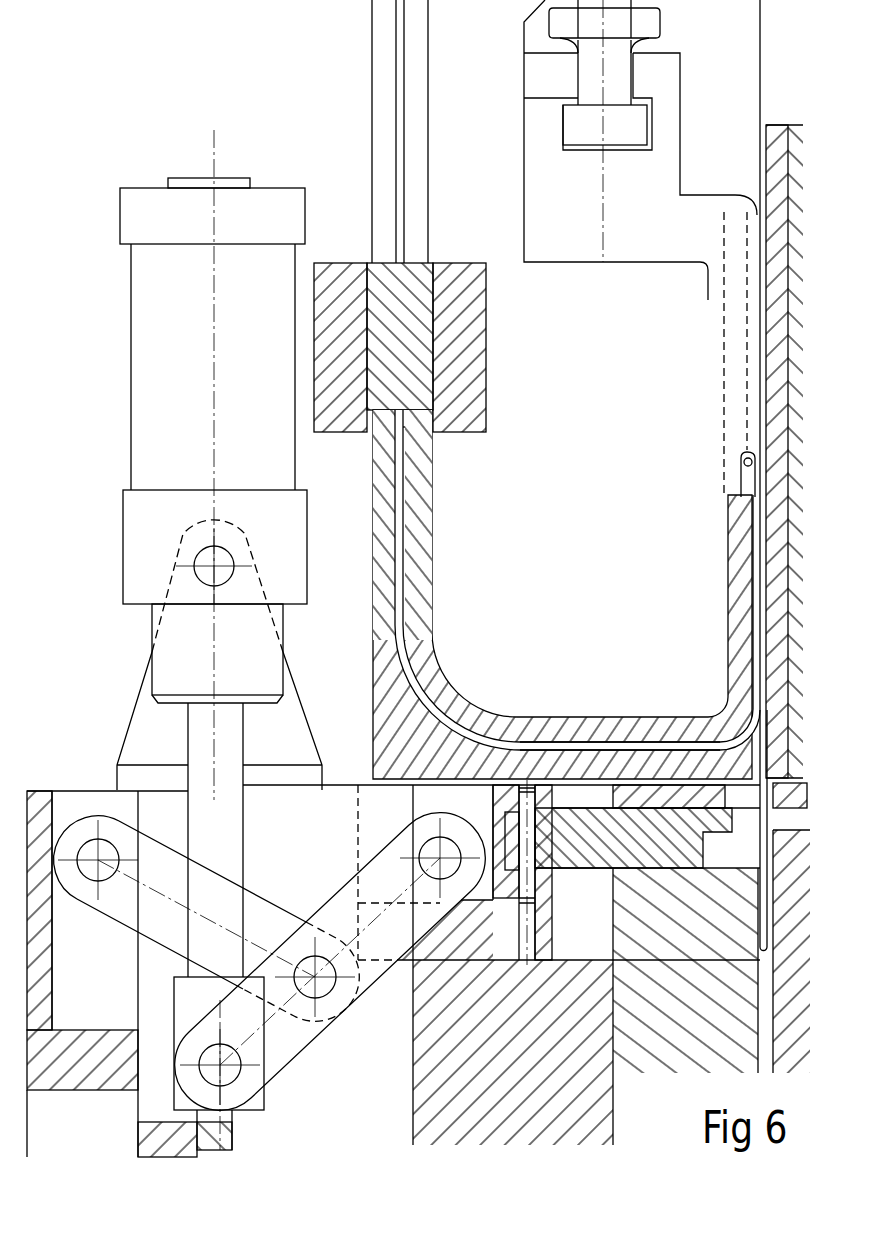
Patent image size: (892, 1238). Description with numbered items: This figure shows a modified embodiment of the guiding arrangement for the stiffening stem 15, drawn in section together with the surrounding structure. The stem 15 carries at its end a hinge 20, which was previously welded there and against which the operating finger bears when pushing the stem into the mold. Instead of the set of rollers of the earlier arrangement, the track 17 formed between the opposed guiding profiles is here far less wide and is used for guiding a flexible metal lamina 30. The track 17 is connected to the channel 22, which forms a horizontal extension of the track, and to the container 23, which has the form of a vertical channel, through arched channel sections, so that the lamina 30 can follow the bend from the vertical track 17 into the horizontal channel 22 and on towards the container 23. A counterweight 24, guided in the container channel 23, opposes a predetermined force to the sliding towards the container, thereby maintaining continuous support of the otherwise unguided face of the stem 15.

The stiffening stem 15 is at (764, 548).
The track 17 is at (745, 667).
The hinge 20 is at (740, 470).
The channel 22 is at (600, 743).
The container 23 is at (420, 590).
The counterweight 24 is at (476, 396).
The flexible metal lamina 30 is at (402, 560).